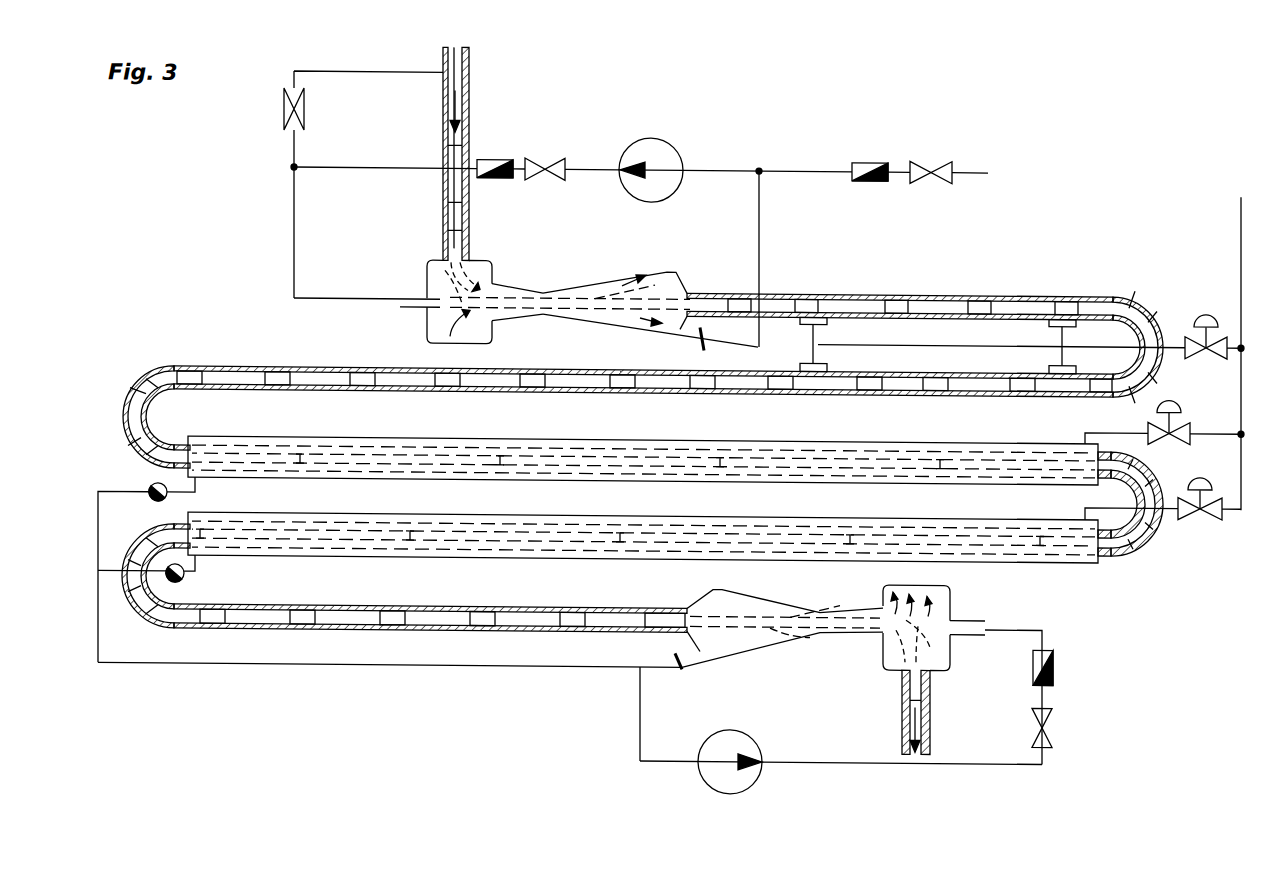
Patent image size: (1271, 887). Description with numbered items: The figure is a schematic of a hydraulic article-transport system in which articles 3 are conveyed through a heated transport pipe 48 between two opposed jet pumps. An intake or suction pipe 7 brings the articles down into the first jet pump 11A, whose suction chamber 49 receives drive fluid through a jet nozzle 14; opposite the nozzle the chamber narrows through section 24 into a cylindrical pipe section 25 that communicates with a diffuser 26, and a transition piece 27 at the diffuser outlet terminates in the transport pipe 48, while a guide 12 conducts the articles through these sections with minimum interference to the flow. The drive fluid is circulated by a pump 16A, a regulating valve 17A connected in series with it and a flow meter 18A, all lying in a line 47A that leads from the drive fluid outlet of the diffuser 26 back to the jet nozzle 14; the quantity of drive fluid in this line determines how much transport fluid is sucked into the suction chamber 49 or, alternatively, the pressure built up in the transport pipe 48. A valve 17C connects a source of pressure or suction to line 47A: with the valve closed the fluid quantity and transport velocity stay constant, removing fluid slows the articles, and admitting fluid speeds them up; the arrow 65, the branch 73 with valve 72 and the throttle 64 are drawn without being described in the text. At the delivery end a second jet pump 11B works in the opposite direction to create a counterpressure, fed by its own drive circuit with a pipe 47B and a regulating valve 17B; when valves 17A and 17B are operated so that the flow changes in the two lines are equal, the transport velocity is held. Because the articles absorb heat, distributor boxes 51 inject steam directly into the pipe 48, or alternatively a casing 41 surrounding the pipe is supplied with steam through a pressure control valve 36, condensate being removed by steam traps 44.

The bypass line 73 is at (345, 74).
The bypass valve 72 is at (284, 115).
The intake or suction pipe 7 is at (427, 154).
The articles 3 is at (448, 220).
The suction chamber 49 is at (427, 266).
The jet nozzle 14 is at (420, 313).
The section 24 is at (507, 288).
The cylindrical pipe section 25 is at (547, 292).
The diffuser 26 is at (622, 280).
The jet pump 11A is at (604, 289).
The transition piece 27 is at (684, 285).
The flow meter 18A is at (497, 161).
The regulating valve 17A is at (539, 162).
The flow direction 65 is at (592, 170).
The pump 16A is at (672, 148).
The valve 17C is at (930, 160).
The line 47A is at (762, 232).
The transport pipe 48 is at (848, 292).
The guide 12 is at (654, 359).
The distributor boxes 51 is at (1040, 337).
The pressure control valve 36 is at (1188, 353).
The casing 41 is at (765, 440).
The steam traps 44 is at (153, 507).
The second jet pump 11B is at (490, 673).
The throttle 64 is at (675, 665).
The regulating valve 17B is at (1032, 725).
The pipe 47B is at (822, 763).